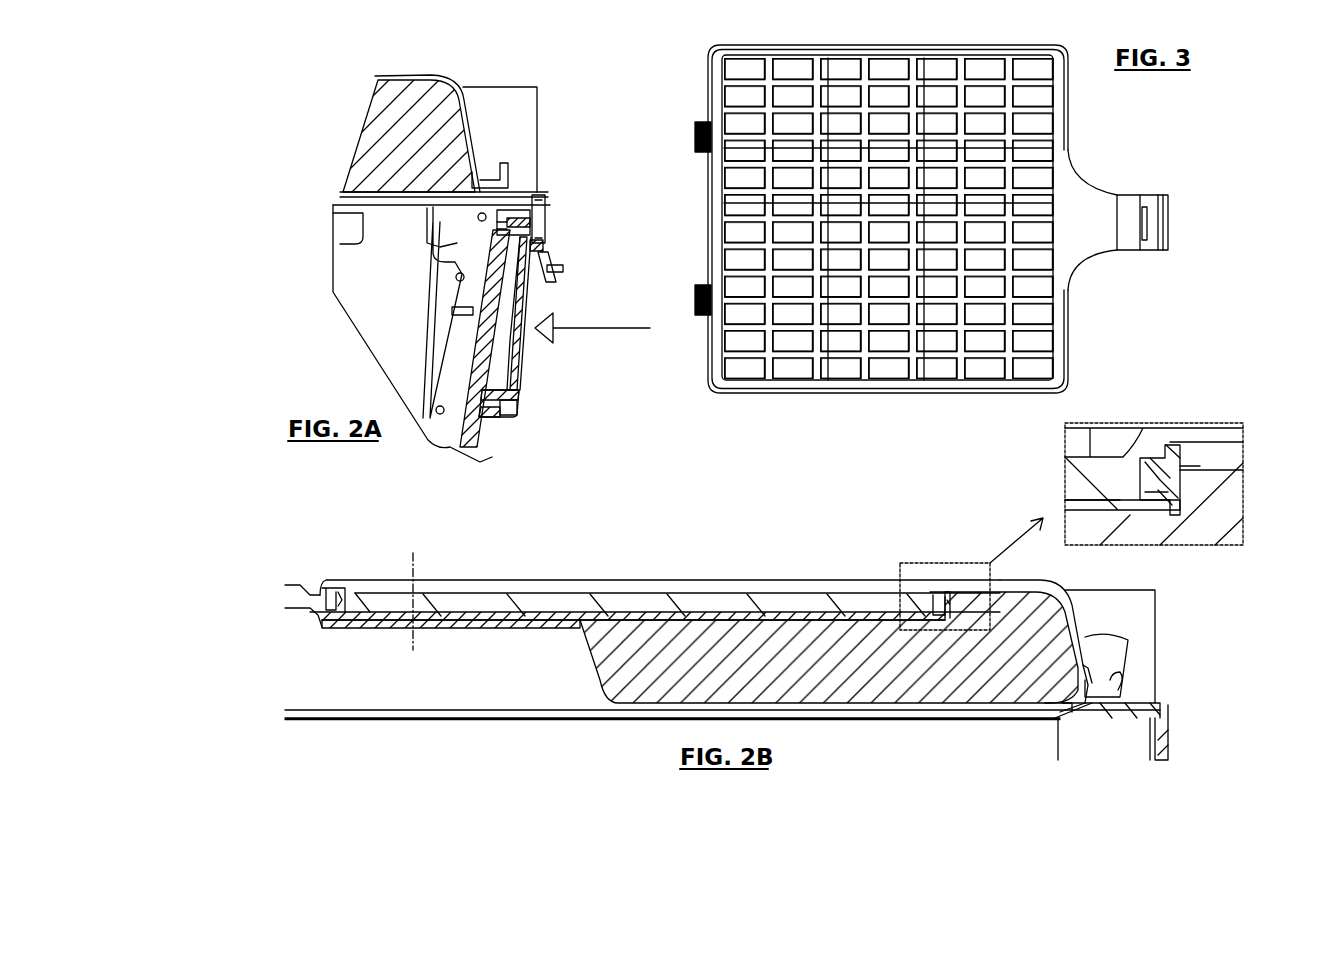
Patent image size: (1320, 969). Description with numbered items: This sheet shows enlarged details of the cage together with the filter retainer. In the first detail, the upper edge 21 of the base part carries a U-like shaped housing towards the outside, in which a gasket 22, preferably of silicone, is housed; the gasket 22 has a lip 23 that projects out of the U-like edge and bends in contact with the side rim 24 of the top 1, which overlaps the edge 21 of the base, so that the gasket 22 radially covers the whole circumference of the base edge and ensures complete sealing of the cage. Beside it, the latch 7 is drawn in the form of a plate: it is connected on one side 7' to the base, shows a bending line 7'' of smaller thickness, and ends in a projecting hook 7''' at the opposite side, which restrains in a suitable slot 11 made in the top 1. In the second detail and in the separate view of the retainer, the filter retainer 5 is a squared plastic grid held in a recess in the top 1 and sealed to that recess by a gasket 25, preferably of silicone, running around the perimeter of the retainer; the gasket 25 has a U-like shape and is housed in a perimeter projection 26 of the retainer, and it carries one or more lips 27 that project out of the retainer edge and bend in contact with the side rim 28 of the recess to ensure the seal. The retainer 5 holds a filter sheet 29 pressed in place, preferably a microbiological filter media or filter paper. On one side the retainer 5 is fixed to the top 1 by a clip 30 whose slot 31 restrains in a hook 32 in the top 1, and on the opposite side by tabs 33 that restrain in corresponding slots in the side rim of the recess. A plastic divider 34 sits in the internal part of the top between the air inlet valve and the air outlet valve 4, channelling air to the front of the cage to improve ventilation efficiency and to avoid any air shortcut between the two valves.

In FIG. 2B, the top 1 is at (482, 688).
In FIG. 2B, the air outlet valve 4 is at (1137, 618).
In FIG. 3, the filter retainer 5 is at (888, 199).
In FIG. 2B, the filter retainer 5 is at (640, 590).
In FIG. 2A, the latch 7 is at (523, 338).
In FIG. 2A, the side of the latch 7' is at (536, 408).
In FIG. 2A, the bending line 7'' is at (554, 317).
In FIG. 2A, the projecting hook 7''' is at (571, 281).
In FIG. 2A, the slot 11 is at (544, 245).
In FIG. 2A, the upper edge 21 is at (510, 212).
In FIG. 2A, the gasket 22 is at (538, 196).
In FIG. 2A, the lip 23 is at (547, 222).
In FIG. 2A, the side rim 24 is at (553, 264).
In FIG. 2B, the gasket 25 is at (328, 588).
In FIG. 2B, the perimeter projection 26 is at (1150, 492).
In FIG. 2B, the lips 27 is at (1180, 458).
In FIG. 2B, the side rim 28 is at (1175, 478).
In FIG. 2B, the filter sheet 29 is at (537, 612).
In FIG. 2A, the clip 30 is at (462, 108).
In FIG. 3, the clip 30 is at (1090, 205).
In FIG. 2B, the clip 30 is at (1077, 650).
In FIG. 3, the slot 31 is at (1148, 250).
In FIG. 2B, the slot 31 is at (1140, 640).
In FIG. 2B, the hook 32 is at (1080, 688).
In FIG. 3, the tabs 33 is at (697, 128).
In FIG. 2B, the plastic divider 34 is at (735, 650).